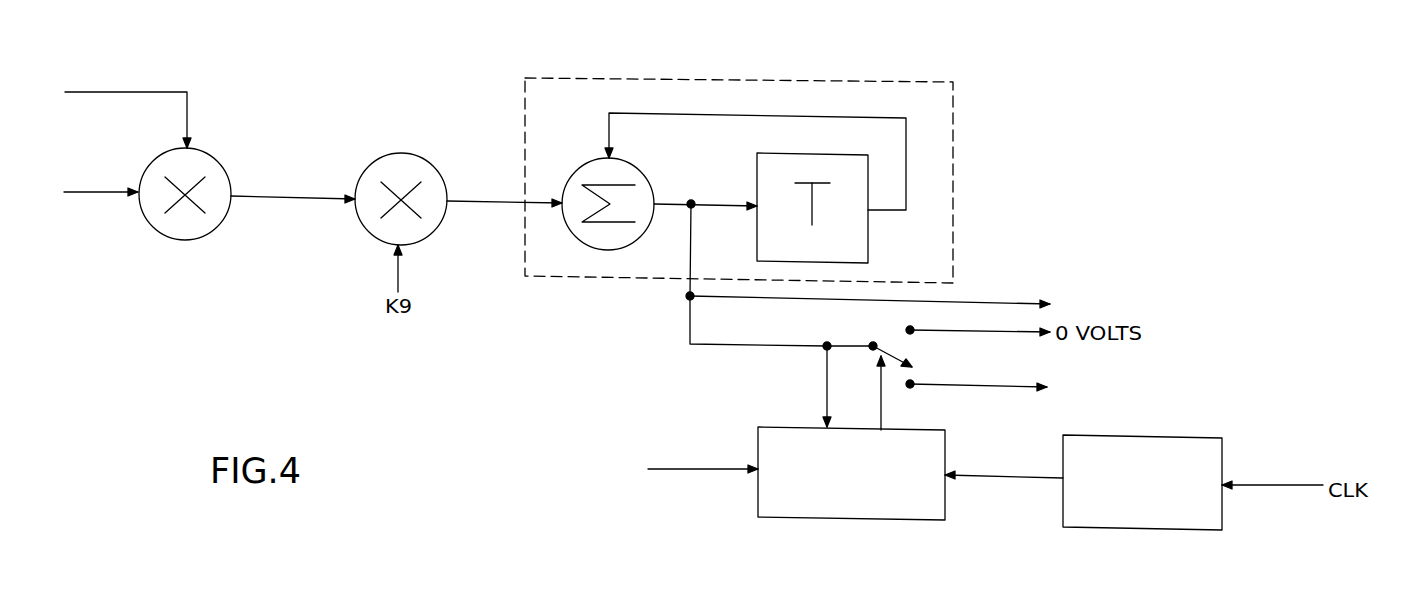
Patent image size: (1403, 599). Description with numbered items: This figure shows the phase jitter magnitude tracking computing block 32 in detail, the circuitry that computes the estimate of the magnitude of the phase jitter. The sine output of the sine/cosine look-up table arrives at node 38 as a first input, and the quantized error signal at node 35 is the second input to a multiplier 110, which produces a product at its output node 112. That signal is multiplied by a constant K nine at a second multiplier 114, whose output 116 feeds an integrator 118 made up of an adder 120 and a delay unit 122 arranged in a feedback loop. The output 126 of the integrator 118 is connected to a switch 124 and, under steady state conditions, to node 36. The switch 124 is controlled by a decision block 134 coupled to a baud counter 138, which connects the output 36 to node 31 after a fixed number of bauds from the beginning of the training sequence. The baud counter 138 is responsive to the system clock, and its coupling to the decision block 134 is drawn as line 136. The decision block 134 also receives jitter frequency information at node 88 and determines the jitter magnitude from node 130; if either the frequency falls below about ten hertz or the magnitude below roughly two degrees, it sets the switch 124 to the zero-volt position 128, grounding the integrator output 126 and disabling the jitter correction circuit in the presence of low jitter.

The phase jitter magnitude tracking computing block 32 is at (376, 63).
The node 38 is at (98, 92).
The node 35 is at (76, 192).
The multiplier 110 is at (217, 153).
The output node 112 is at (263, 197).
The multiplier 114 is at (412, 155).
The output 116 is at (495, 202).
The integrator 118 is at (570, 76).
The adder 120 is at (648, 178).
The delay unit 122 is at (868, 242).
The output 126 is at (689, 311).
The node 36 is at (1053, 308).
The switch 124 is at (892, 350).
The position 128 is at (942, 331).
The node 130 is at (960, 385).
The node 31 is at (991, 390).
The decision block 134 is at (790, 518).
The node 88 is at (680, 469).
The baud counter output line 136 is at (1038, 478).
The baud counter 138 is at (1152, 528).